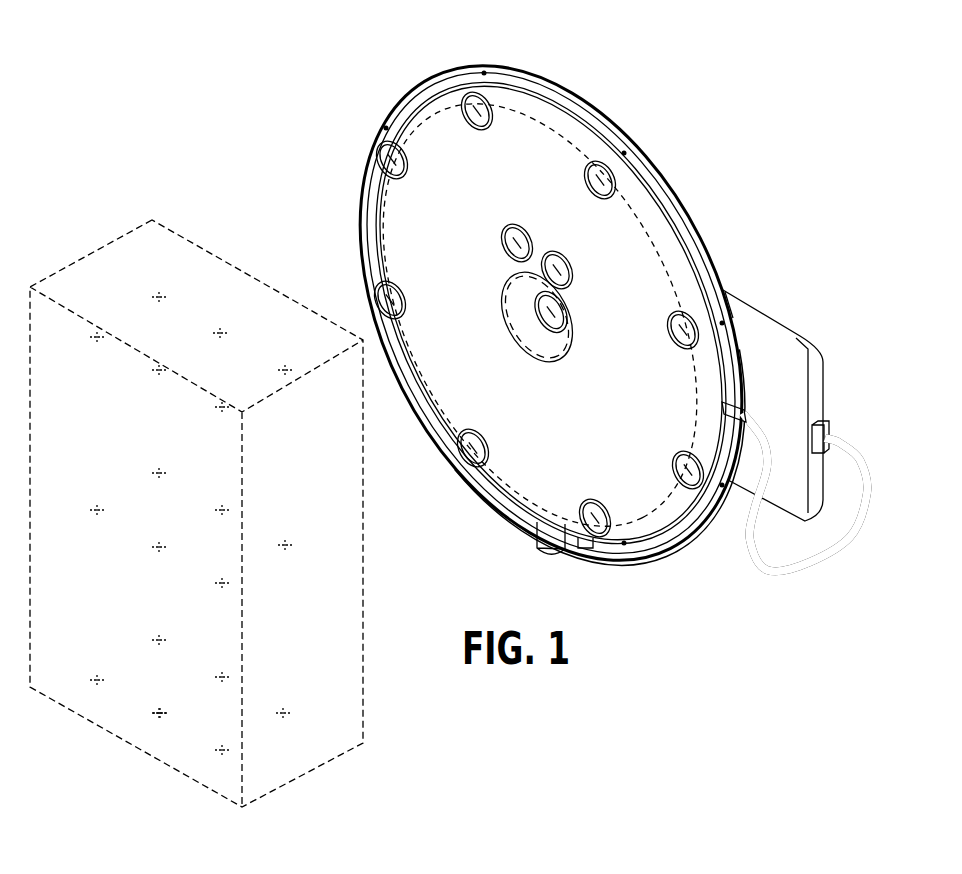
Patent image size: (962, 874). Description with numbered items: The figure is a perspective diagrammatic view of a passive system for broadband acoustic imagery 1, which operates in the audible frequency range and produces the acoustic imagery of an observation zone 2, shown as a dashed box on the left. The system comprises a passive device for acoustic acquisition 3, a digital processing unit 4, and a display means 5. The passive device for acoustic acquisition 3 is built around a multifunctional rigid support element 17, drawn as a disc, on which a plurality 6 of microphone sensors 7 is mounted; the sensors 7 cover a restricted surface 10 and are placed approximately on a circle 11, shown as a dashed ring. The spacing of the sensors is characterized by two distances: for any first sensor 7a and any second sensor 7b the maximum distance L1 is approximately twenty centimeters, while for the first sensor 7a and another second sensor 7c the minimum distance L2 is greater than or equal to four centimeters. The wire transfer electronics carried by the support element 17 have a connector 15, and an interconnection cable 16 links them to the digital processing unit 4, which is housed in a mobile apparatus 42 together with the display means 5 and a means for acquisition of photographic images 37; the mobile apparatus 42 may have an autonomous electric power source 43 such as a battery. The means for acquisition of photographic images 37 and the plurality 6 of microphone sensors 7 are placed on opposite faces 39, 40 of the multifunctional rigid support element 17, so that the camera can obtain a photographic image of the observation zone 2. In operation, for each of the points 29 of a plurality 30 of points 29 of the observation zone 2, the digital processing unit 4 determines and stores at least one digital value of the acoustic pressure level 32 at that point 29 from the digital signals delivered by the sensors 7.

The passive system for broadband acoustic imagery 1 is at (768, 205).
The observation zone 2 is at (84, 256).
The passive device for acoustic acquisition 3 is at (353, 88).
The digital processing unit 4 is at (795, 380).
The display means 5 is at (795, 425).
The plurality of microphone sensors 6 is at (592, 172).
The microphone sensor 7 is at (380, 298).
The first sensor 7a is at (473, 466).
The second sensor 7b is at (612, 176).
The second sensor 7c is at (596, 538).
The restricted surface 10 is at (628, 478).
The circle 11 is at (655, 212).
The connector 15 is at (737, 423).
The interconnection cable 16 is at (814, 562).
The multifunctional rigid support element 17 is at (440, 402).
The point 29 is at (283, 713).
The plurality of points 30 is at (222, 752).
The acoustic pressure level 32 is at (222, 750).
The means for acquisition of photographic images 37 is at (548, 295).
The face of the multifunctional rigid support element 39 is at (542, 173).
The face of the multifunctional rigid support element 40 is at (612, 122).
The mobile apparatus 42 is at (752, 372).
The autonomous electric power source 43 is at (777, 474).
The maximum distance L1 is at (587, 200).
The minimum distance L2 is at (580, 510).